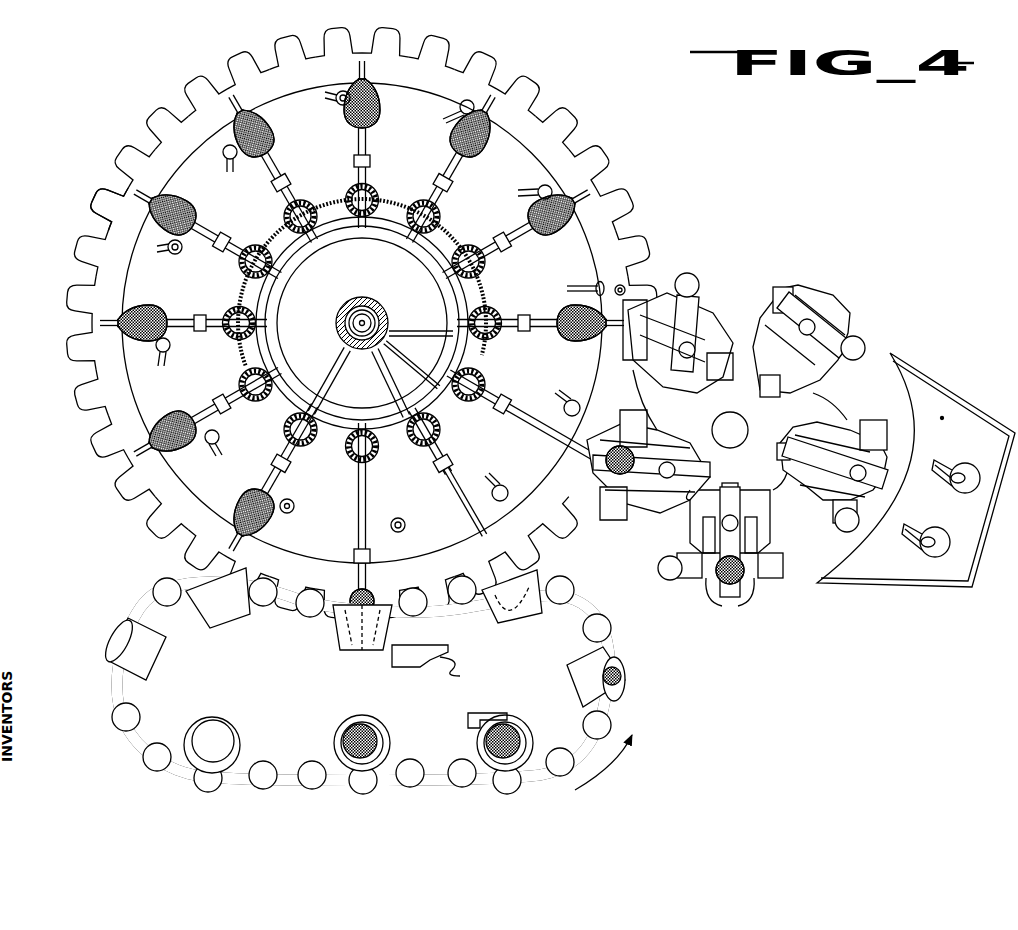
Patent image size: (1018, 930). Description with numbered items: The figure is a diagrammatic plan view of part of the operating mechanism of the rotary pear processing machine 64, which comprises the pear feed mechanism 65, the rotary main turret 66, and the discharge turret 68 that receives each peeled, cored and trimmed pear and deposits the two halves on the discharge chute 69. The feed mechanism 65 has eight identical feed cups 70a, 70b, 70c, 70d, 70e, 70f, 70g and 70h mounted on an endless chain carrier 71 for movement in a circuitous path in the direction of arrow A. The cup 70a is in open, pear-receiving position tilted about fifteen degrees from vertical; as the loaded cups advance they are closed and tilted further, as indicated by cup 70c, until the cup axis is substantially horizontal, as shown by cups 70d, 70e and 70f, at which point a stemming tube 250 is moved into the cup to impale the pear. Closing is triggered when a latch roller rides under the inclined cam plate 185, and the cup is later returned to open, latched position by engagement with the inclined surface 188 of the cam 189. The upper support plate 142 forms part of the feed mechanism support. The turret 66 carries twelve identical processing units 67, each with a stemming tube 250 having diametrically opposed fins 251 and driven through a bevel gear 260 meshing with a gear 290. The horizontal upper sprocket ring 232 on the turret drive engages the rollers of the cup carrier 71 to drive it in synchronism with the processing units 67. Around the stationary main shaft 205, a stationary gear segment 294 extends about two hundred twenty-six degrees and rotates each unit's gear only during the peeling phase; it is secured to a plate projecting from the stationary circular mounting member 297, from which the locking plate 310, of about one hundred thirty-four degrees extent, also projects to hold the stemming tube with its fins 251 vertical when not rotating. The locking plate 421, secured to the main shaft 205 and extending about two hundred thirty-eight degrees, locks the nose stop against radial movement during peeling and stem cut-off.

The rotary pear processing machine 64 is at (645, 157).
The upper sprocket ring 232 is at (115, 200).
The rotary main turret 66 is at (120, 512).
The locking plate 310 is at (335, 436).
The locking plate 421 is at (333, 360).
The stationary circular mounting member 297 is at (381, 390).
The stationary gear segment 294 is at (450, 235).
The stationary main shaft 205 is at (375, 306).
The processing units 67 is at (357, 237).
The fins 251 is at (458, 486).
The gear 290 is at (426, 198).
The bevel gear 260 is at (284, 209).
The stemming tube 250 is at (540, 240).
The discharge turret 68 is at (815, 288).
The discharge chute 69 is at (948, 385).
The endless chain carrier 71 is at (135, 740).
The pear feed mechanism 65 is at (640, 688).
The feed cup 70a is at (395, 736).
The feed cup 70b is at (532, 722).
The feed cup 70c is at (565, 675).
The feed cup 70d is at (535, 616).
The feed cup 70e is at (330, 642).
The feed cup 70f is at (222, 622).
The feed cup 70g is at (103, 650).
The feed cup 70h is at (238, 725).
The upper support plate 142 is at (419, 671).
The cam 189 is at (413, 650).
The inclined surface 188 is at (458, 672).
The cam plate 185 is at (485, 713).
The arrow A is at (610, 764).